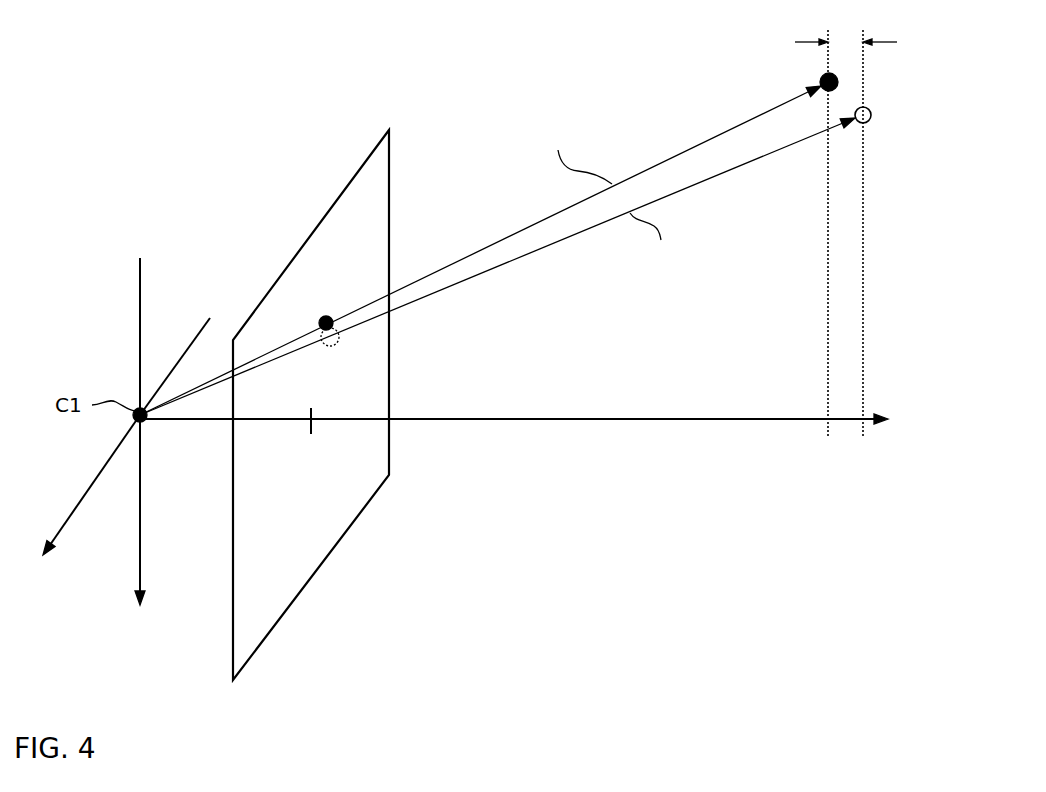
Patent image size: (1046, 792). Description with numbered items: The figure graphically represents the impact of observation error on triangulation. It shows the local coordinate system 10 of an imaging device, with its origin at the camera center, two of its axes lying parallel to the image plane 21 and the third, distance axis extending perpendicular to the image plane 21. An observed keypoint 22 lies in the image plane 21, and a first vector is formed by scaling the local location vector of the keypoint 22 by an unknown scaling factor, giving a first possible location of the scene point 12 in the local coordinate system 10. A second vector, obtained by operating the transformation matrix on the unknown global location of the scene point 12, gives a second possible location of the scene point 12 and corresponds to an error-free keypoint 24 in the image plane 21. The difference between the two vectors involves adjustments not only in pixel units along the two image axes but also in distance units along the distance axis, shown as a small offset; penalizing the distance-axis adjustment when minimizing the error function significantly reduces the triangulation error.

The local coordinate system 10 is at (126, 373).
The scene point 12 is at (820, 78).
The image plane 21 is at (391, 357).
The keypoint 22 is at (326, 316).
The error-free keypoint 24 is at (333, 346).